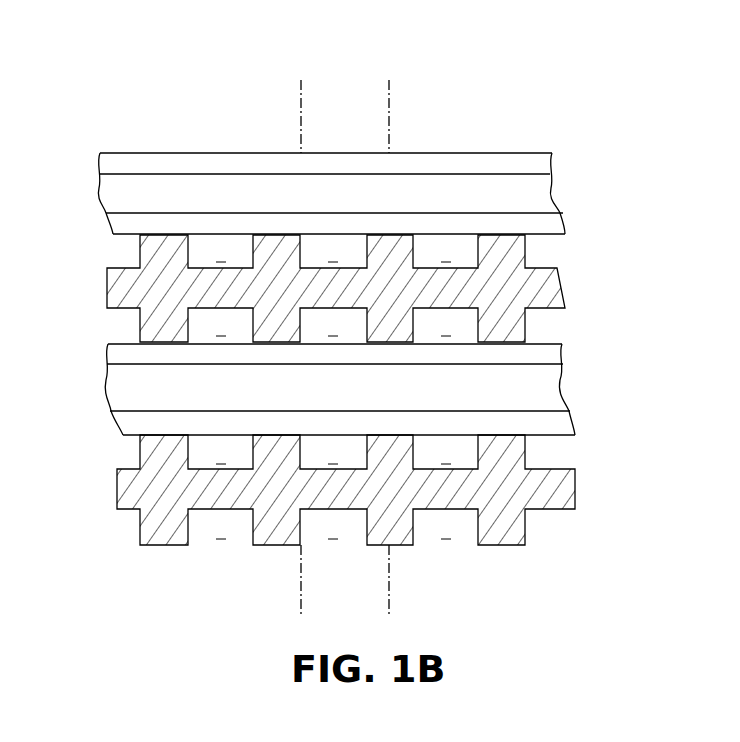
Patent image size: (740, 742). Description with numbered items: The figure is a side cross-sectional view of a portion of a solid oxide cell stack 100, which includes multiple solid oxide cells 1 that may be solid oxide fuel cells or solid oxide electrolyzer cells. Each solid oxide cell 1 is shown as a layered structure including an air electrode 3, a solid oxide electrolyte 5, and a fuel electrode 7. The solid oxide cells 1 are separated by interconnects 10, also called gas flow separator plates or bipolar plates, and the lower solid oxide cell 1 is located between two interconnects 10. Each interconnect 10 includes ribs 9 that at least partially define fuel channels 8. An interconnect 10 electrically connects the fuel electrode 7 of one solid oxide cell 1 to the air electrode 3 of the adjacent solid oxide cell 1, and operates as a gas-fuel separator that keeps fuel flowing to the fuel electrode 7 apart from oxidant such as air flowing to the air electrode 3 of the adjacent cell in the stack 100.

The solid oxide cell stack 100 is at (216, 93).
The solid oxide cell 1 is at (334, 291).
The air electrode 3 is at (309, 256).
The solid oxide electrolyte 5 is at (312, 292).
The fuel electrode 7 is at (315, 320).
The rib 9 is at (313, 390).
The fuel channel 8 is at (333, 391).
The interconnect 10 is at (344, 390).